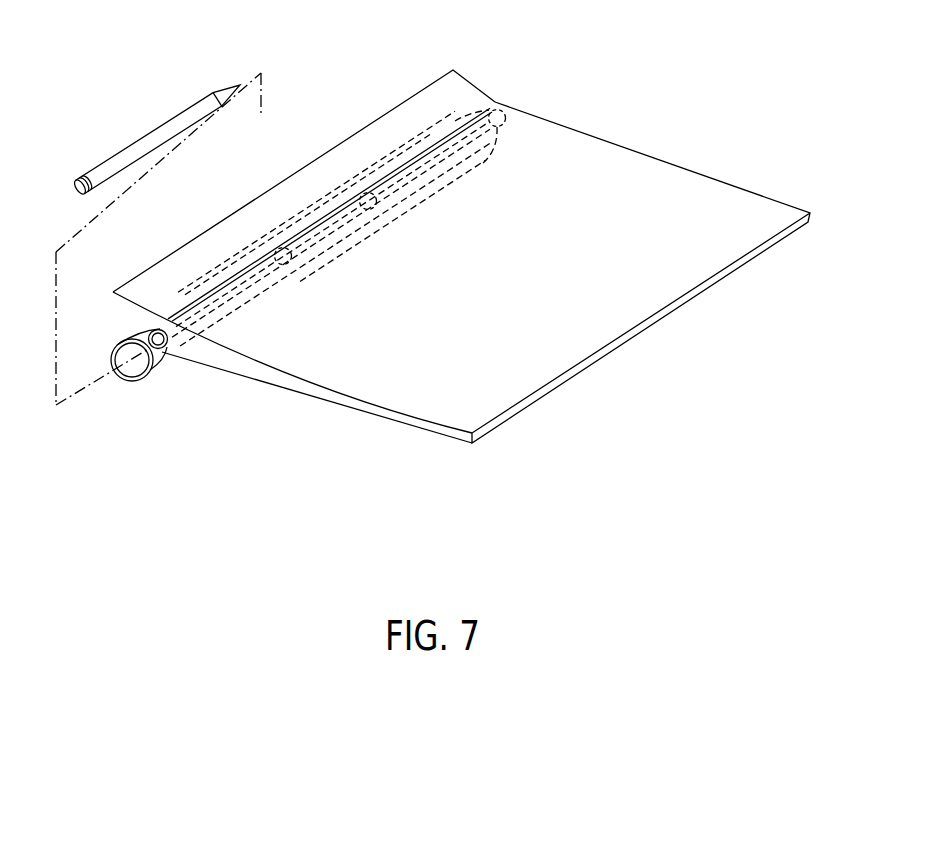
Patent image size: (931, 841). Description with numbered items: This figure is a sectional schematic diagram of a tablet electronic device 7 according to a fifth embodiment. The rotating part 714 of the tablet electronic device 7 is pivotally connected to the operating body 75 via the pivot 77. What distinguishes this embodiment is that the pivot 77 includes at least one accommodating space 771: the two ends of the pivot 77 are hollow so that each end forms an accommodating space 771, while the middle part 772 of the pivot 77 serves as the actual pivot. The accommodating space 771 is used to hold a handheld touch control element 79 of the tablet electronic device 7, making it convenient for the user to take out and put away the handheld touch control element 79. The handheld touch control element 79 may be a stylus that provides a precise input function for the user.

The tablet electronic device 7 is at (630, 92).
The operating body 75 is at (692, 190).
The pivot 77 is at (161, 350).
The accommodating space 771 is at (427, 160).
The middle part 772 is at (310, 213).
The rotating part 714 is at (124, 381).
The handheld touch control element 79 is at (145, 145).